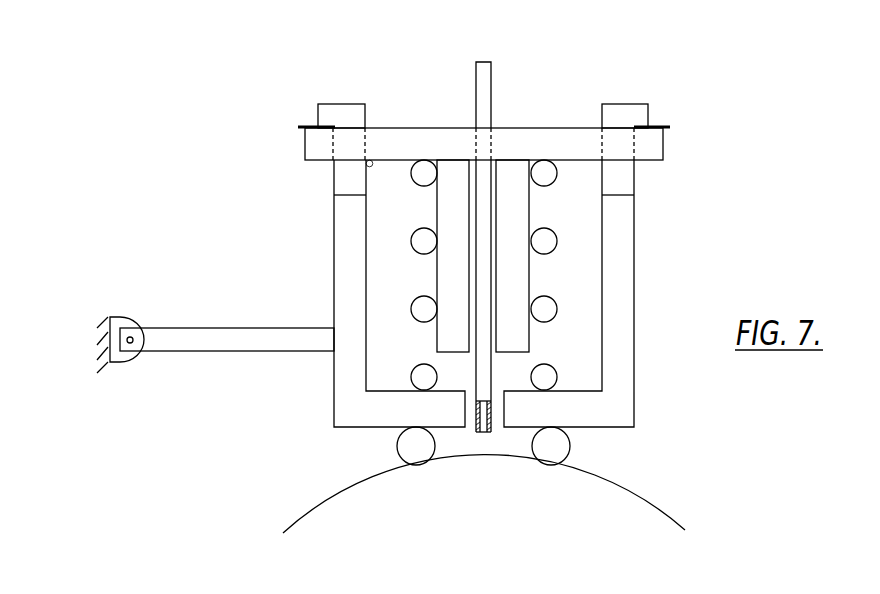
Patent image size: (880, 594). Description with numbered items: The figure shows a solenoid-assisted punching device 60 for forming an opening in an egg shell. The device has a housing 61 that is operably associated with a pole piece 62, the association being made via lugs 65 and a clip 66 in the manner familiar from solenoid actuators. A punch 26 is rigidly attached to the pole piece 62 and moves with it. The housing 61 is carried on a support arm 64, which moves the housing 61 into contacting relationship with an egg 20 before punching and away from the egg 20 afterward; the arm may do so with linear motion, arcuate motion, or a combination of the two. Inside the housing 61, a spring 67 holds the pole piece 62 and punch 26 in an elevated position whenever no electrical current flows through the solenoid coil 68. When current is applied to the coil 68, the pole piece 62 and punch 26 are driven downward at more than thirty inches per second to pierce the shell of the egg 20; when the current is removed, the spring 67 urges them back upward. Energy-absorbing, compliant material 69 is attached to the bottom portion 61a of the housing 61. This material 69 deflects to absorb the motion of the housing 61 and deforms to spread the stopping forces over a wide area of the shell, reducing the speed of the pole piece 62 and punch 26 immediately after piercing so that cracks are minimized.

The egg 20 is at (677, 525).
The punch 26 is at (492, 78).
The solenoid-assisted punching device 60 is at (669, 76).
The housing 61 is at (633, 256).
The bottom portion of the housing 61a is at (614, 428).
The pole piece 62 is at (523, 128).
The support arm 64 is at (183, 328).
The lugs 65 is at (347, 110).
The clip 66 is at (308, 126).
The spring 67 is at (545, 240).
The solenoid coil 68 is at (640, 311).
The energy-absorbing, compliant material 69 is at (407, 451).